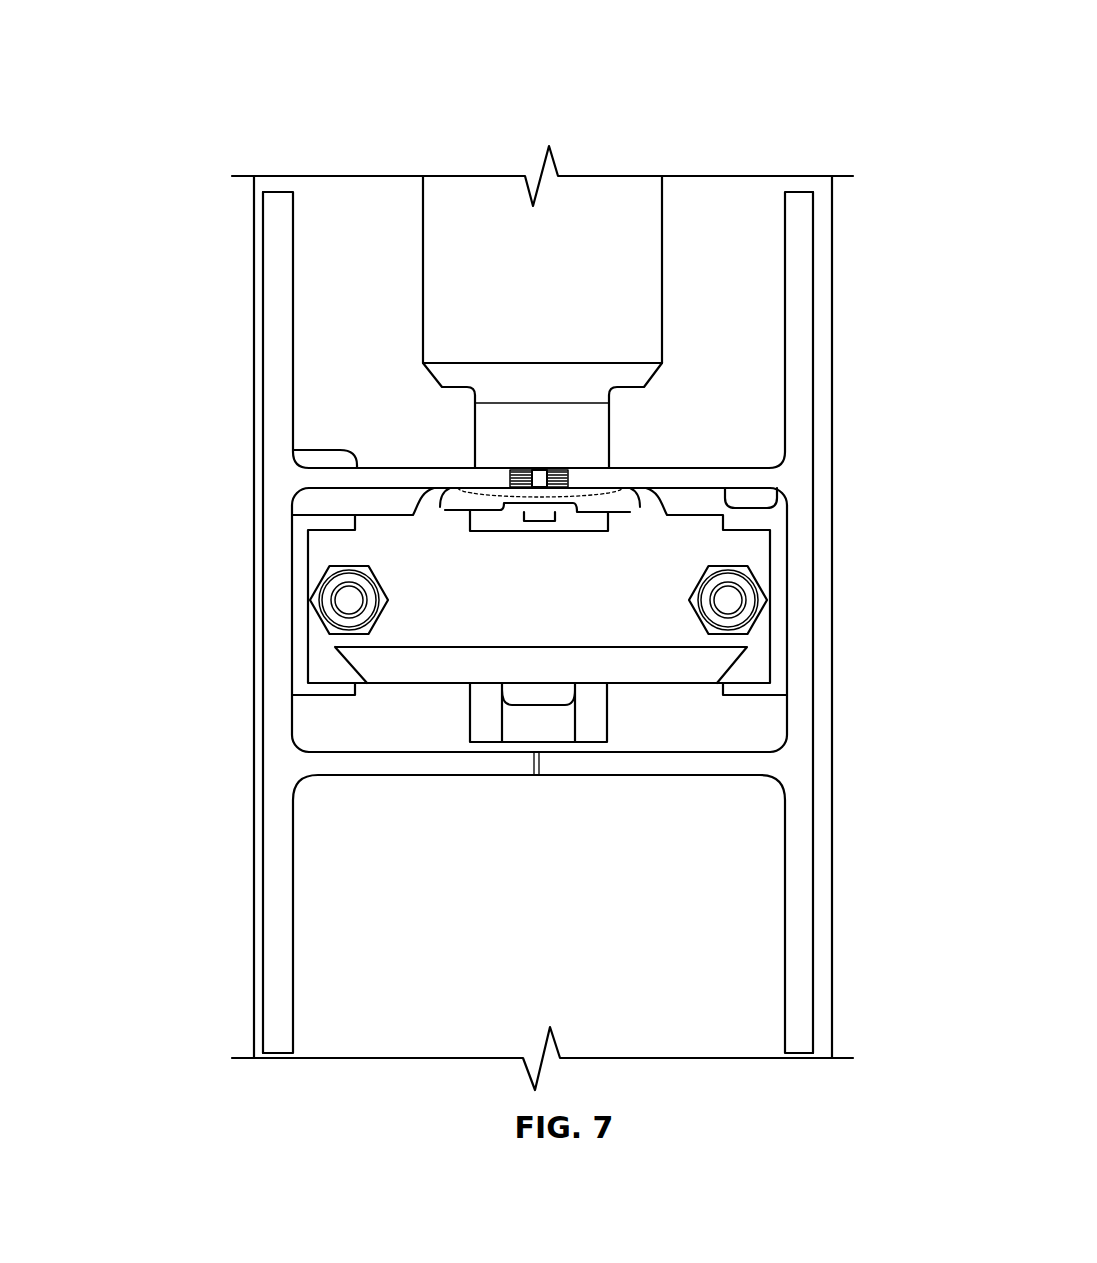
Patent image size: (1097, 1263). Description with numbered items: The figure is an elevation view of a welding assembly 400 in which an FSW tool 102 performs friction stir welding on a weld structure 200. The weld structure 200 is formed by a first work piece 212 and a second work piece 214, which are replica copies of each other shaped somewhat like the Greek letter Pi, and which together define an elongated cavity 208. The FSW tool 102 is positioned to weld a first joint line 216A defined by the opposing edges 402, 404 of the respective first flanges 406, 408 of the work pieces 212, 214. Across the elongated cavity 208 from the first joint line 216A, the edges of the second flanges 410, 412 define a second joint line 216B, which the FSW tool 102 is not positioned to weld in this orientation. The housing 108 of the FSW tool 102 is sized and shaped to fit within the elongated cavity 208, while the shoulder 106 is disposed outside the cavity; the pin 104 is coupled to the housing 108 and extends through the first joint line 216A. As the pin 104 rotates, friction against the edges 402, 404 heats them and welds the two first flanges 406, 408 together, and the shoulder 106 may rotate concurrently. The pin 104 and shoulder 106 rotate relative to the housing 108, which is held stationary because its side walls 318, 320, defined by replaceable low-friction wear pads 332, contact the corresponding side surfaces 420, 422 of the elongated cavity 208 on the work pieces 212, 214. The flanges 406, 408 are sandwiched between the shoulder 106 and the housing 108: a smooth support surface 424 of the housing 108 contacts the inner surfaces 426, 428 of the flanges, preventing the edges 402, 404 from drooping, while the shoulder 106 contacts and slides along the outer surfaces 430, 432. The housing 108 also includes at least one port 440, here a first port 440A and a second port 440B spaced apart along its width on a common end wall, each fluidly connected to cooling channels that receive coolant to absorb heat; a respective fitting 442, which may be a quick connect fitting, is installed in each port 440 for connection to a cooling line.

The welding assembly 400 is at (262, 62).
The weld structure 200 is at (506, 610).
The FSW tool 102 is at (621, 278).
The pin 104 is at (518, 289).
The shoulder 106 is at (430, 295).
The housing 108 is at (753, 551).
The first work piece 212 is at (272, 557).
The second work piece 214 is at (805, 590).
The first joint line 216A is at (512, 462).
The second joint line 216B is at (538, 782).
The elongated cavity 208 is at (547, 629).
The side wall 318 is at (292, 607).
The side wall 320 is at (782, 623).
The wear pads 332 is at (557, 698).
The edge 402 is at (521, 466).
The edge 404 is at (560, 468).
The first flange 406 is at (398, 468).
The first flange 408 is at (698, 468).
The second flange 410 is at (387, 767).
The second flange 412 is at (678, 767).
The side surface 420 is at (534, 561).
The side surface 422 is at (828, 718).
The support surface 424 is at (480, 485).
The inner surface 426 is at (378, 490).
The inner surface 428 is at (789, 507).
The outer surface 430 is at (300, 450).
The outer surface 432 is at (678, 468).
The port 440 is at (513, 642).
The first port 440A is at (340, 612).
The second port 440B is at (765, 600).
The fitting 442 is at (513, 676).